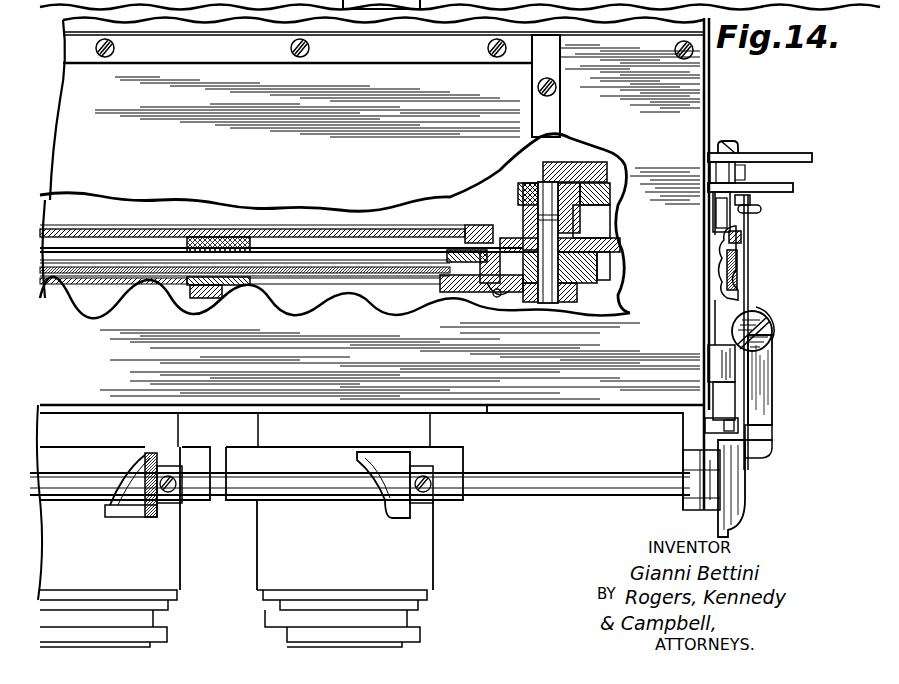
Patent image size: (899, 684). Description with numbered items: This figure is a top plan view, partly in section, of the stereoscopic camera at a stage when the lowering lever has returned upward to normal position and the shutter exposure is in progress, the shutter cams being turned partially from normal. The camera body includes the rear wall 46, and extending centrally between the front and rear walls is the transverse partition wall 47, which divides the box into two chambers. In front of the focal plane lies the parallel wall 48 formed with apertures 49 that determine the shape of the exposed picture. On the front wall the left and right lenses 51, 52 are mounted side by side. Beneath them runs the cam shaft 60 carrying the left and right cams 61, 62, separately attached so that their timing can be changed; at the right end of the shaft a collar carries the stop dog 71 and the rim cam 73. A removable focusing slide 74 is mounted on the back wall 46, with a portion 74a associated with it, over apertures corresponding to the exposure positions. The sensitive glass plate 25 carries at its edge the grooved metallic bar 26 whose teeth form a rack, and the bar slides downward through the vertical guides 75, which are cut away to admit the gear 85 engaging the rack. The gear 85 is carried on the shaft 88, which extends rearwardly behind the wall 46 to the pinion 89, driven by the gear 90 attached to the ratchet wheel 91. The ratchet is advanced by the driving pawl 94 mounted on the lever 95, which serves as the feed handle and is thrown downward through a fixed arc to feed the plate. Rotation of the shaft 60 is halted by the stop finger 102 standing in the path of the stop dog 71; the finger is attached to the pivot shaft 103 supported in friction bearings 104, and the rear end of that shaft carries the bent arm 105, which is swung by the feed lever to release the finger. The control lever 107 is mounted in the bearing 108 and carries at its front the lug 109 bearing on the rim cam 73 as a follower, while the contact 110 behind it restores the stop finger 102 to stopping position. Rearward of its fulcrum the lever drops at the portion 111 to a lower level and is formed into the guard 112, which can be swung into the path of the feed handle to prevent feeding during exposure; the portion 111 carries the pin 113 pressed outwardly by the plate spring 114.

The glass plate 25 is at (388, 283).
The grooved metallic bar 26 is at (483, 301).
The rear wall 46 is at (207, 237).
The transverse partition wall 47 is at (216, 297).
The parallel wall 48 is at (240, 285).
The apertures 49 is at (305, 280).
The left lens 51 is at (110, 547).
The right lens 52 is at (345, 573).
The cam shaft 60 is at (613, 490).
The left cam 61 is at (152, 455).
The right cam 62 is at (395, 466).
The stop dog 71 is at (690, 458).
The rim cam 73 is at (746, 492).
The focusing slide 74 is at (143, 232).
The rail extension 74a is at (476, 226).
The vertical guides 75 is at (447, 257).
The gear 85 is at (590, 283).
The shaft 88 is at (546, 303).
The pinion 89 is at (518, 192).
The gear 90 is at (592, 221).
The ratchet wheel 91 is at (543, 170).
The driving pawl 94 is at (708, 168).
The lever 95 is at (780, 156).
The stop finger 102 is at (705, 426).
The pivot shaft 103 is at (713, 227).
The bearings 104 is at (716, 362).
The bent arm 105 is at (760, 212).
The control lever 107 is at (772, 376).
The bearing 108 is at (770, 320).
The lug 109 is at (764, 452).
The contact 110 is at (766, 432).
The portion 111 is at (742, 238).
The guard 112 is at (752, 199).
The pin 113 is at (740, 270).
The plate spring 114 is at (711, 278).